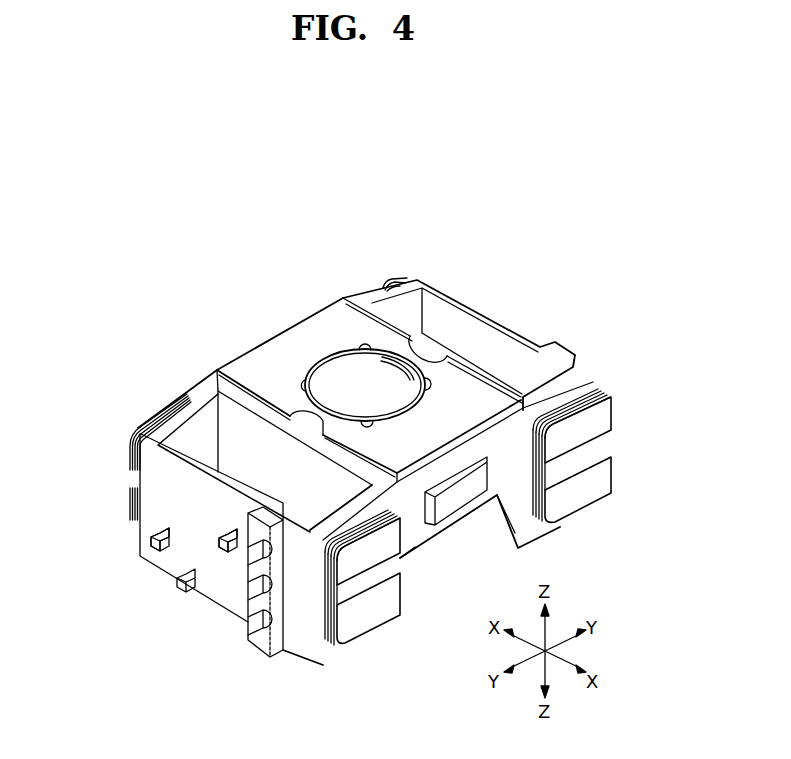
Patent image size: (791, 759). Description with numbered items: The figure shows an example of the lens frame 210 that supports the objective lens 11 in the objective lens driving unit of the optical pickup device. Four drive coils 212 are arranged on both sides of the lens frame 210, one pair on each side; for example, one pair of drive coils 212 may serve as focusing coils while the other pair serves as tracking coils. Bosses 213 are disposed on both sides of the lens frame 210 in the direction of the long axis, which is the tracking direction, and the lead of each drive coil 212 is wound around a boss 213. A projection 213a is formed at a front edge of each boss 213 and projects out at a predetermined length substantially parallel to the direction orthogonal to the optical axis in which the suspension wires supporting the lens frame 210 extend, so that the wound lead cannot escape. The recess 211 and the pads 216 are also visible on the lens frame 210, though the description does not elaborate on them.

The lens frame 210 is at (345, 270).
The pocket 211 is at (238, 438).
The objective lens 11 is at (348, 372).
The drive coils 212 is at (397, 279).
The bosses 213 is at (208, 553).
The projection 213a is at (155, 545).
The pad 216 is at (370, 620).